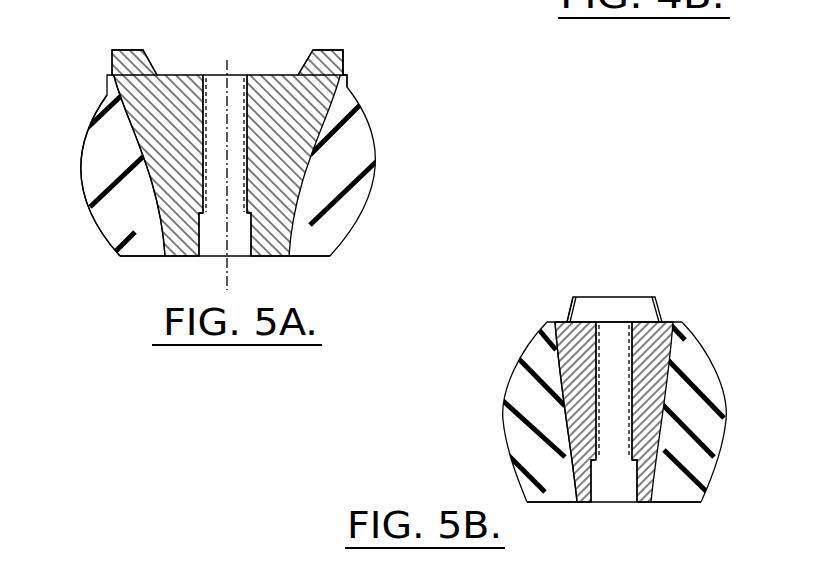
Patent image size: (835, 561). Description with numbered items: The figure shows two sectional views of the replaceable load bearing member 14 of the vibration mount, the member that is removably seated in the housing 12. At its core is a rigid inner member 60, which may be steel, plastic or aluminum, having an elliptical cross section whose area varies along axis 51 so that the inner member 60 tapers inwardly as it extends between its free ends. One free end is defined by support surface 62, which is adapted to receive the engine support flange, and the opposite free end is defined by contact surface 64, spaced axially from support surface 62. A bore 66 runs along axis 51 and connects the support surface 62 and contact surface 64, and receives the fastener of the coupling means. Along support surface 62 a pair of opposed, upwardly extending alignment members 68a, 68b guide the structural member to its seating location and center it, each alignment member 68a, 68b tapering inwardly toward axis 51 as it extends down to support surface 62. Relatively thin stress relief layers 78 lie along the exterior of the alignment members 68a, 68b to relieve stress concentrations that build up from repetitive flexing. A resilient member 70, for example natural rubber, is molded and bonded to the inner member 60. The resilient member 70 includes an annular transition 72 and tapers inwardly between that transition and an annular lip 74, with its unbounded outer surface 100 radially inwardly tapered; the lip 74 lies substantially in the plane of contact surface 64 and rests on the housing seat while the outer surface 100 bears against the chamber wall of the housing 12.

In FIG. 5A, the housing 12 is at (76, 175).
In FIG. 5A, the replaceable load bearing member 14 is at (268, 260).
In FIG. 5B, the replaceable load bearing member 14 is at (653, 386).
In FIG. 5A, the axis 51 is at (256, 179).
In FIG. 5A, the rigid inner member 60 is at (101, 166).
In FIG. 5B, the rigid inner member 60 is at (536, 412).
In FIG. 5A, the support surface 62 is at (227, 149).
In FIG. 5B, the support surface 62 is at (630, 380).
In FIG. 5A, the contact surface 64 is at (225, 253).
In FIG. 5B, the contact surface 64 is at (614, 496).
In FIG. 5A, the bore 66 is at (240, 128).
In FIG. 5B, the bore 66 is at (595, 438).
In FIG. 5A, the alignment member 68a is at (111, 48).
In FIG. 5B, the alignment member 68a is at (605, 282).
In FIG. 5A, the alignment member 68b is at (342, 42).
In FIG. 5A, the resilient member 70 is at (259, 165).
In FIG. 5B, the resilient member 70 is at (645, 412).
In FIG. 5A, the annular transition 72 is at (252, 175).
In FIG. 5B, the annular transition 72 is at (591, 389).
In FIG. 5A, the annular lip 74 is at (330, 277).
In FIG. 5B, the annular lip 74 is at (694, 517).
In FIG. 5A, the stress relief layer 78 is at (368, 61).
In FIG. 5B, the stress relief layer 78 is at (552, 294).
In FIG. 5A, the unbounded outer surface 100 is at (261, 188).
In FIG. 5B, the unbounded outer surface 100 is at (640, 448).